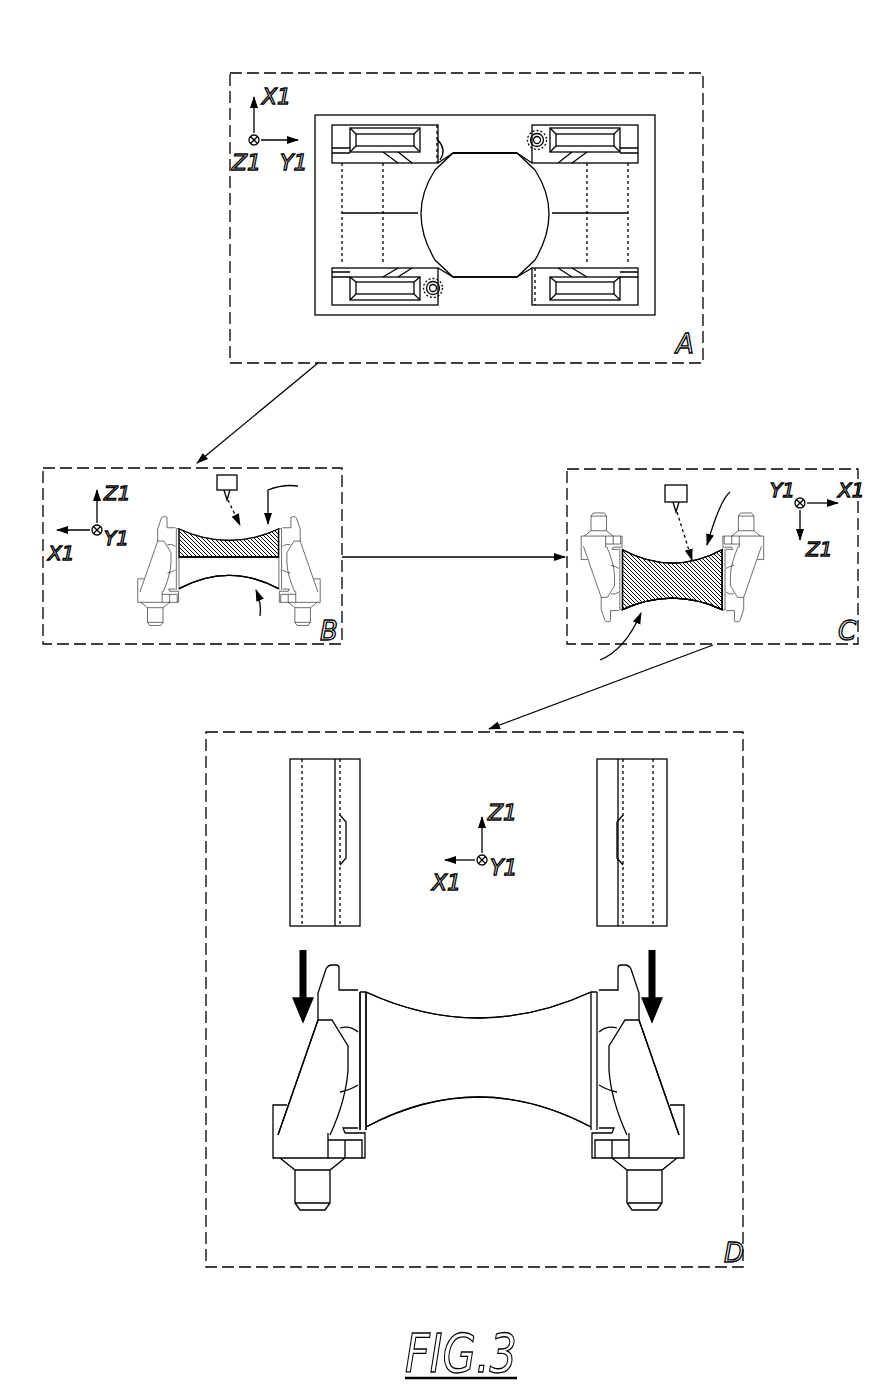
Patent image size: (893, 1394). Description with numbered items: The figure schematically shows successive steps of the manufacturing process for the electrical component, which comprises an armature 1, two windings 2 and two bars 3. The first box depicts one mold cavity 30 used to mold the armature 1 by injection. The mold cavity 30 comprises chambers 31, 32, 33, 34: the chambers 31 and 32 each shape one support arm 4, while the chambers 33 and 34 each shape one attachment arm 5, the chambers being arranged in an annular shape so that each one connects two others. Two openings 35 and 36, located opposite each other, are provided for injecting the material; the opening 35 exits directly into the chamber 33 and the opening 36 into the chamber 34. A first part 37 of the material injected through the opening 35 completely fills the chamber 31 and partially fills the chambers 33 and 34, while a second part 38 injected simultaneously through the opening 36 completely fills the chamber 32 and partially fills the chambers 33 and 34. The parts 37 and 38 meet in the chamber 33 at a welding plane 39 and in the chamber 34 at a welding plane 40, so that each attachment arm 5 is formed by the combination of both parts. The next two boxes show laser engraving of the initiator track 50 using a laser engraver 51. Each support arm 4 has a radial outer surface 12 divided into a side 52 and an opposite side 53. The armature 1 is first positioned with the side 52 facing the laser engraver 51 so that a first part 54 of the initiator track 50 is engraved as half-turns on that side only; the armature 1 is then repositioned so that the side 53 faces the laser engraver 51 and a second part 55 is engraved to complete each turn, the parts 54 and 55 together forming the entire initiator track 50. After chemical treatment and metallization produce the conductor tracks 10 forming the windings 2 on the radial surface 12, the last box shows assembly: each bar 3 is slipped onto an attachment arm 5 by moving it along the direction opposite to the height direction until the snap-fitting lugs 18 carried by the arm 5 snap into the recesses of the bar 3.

The armature 1 is at (130, 572).
The winding 2 is at (568, 1092).
The bar 3 is at (310, 840).
The support arm 4 is at (510, 1012).
The attachment arm 5 is at (298, 1053).
The conductor track 10 is at (378, 1020).
The radial outer surface 12 is at (230, 577).
The snap-fitting lug 18 is at (303, 1100).
The mold cavity 30 is at (666, 145).
The chamber 31 is at (360, 222).
The chamber 32 is at (572, 238).
The chamber 33 is at (480, 282).
The chamber 34 is at (498, 150).
The opening 35 is at (422, 294).
The opening 36 is at (544, 130).
The first part of the material 37 is at (508, 296).
The second part of the material 38 is at (484, 90).
The welding plane 39 is at (536, 285).
The welding plane 40 is at (447, 132).
The initiator track 50 is at (185, 528).
The laser engraver 51 is at (236, 480).
The side 52 is at (454, 579).
The side 53 is at (506, 559).
The first part of the initiator track 54 is at (222, 541).
The second part of the initiator track 55 is at (662, 562).